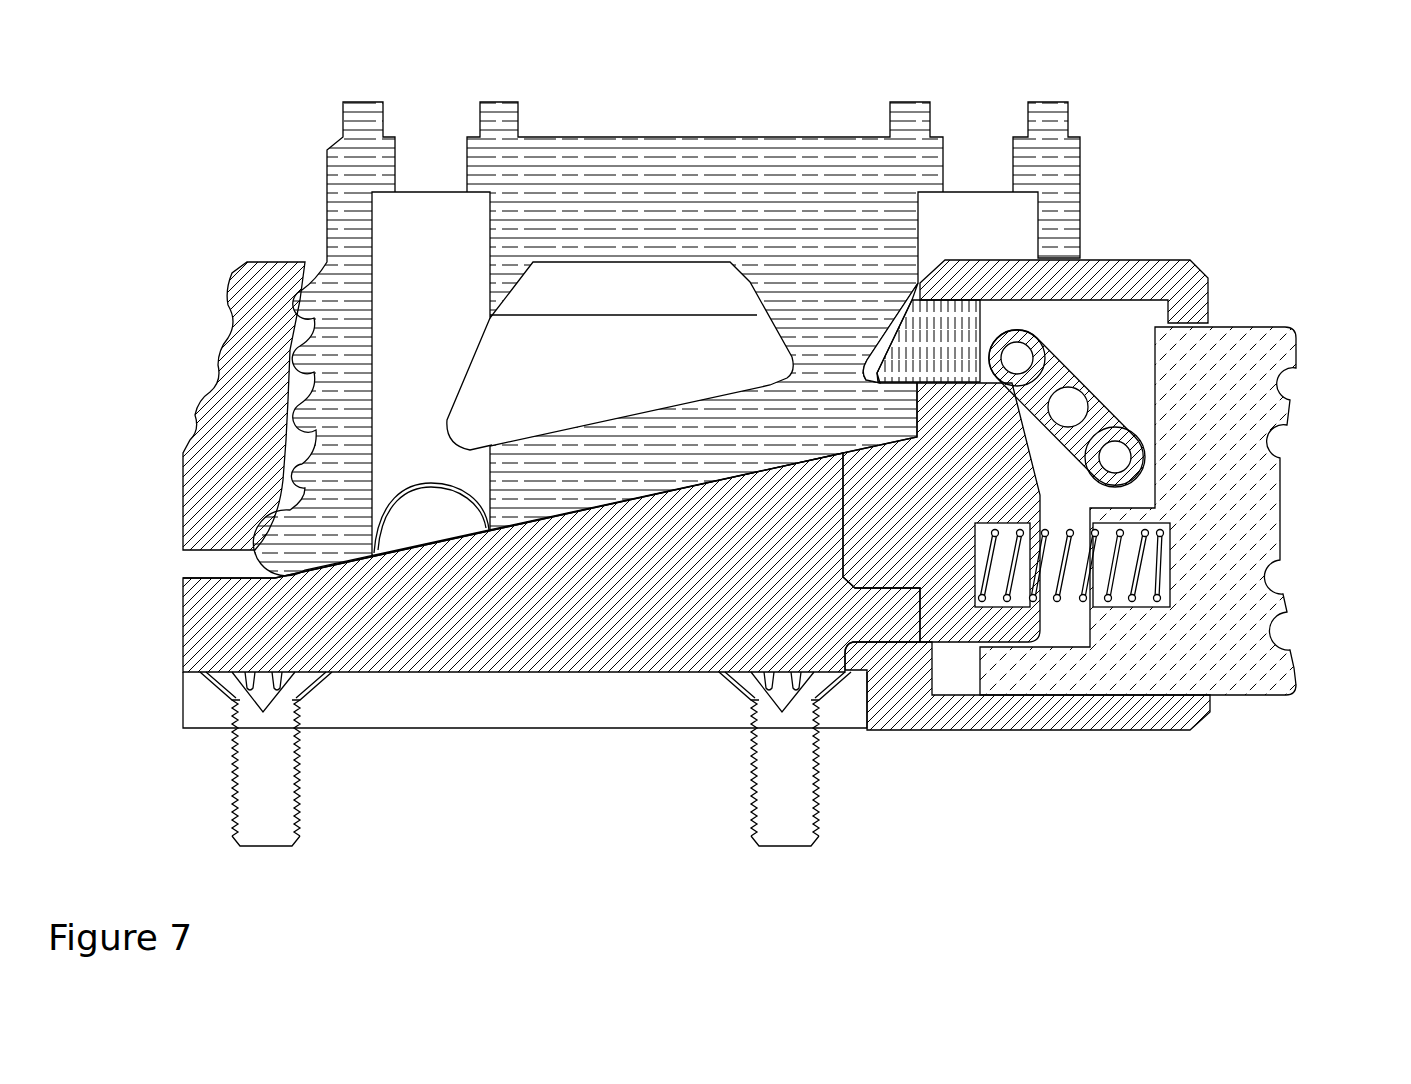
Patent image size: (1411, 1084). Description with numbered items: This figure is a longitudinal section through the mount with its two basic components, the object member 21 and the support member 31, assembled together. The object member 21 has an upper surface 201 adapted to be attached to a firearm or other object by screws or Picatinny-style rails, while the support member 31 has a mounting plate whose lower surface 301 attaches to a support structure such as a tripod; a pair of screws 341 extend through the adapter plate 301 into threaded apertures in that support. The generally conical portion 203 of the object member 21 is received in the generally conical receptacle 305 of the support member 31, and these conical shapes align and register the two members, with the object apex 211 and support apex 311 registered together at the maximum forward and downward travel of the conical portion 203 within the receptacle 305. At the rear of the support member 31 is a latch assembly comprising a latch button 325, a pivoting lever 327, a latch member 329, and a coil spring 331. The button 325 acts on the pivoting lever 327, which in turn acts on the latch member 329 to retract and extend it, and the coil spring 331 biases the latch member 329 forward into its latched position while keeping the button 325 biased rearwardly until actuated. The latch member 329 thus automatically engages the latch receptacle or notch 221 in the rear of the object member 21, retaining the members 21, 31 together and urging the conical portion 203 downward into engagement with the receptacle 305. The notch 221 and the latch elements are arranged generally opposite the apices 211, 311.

The object member 21 is at (1128, 110).
The support member 31 is at (1070, 785).
The upper surface 201 is at (675, 137).
The conical portion 203 is at (336, 500).
The apex 211 is at (262, 548).
The latch receptacle or notch 221 is at (887, 300).
The lower surface 301 is at (510, 710).
The conical receptacle 305 is at (635, 500).
The apex 311 is at (260, 548).
The latch button 325 is at (1235, 528).
The pivoting lever 327 is at (1062, 360).
The latch member 329 is at (947, 335).
The coil spring 331 is at (1070, 568).
The screws 341 is at (278, 806).